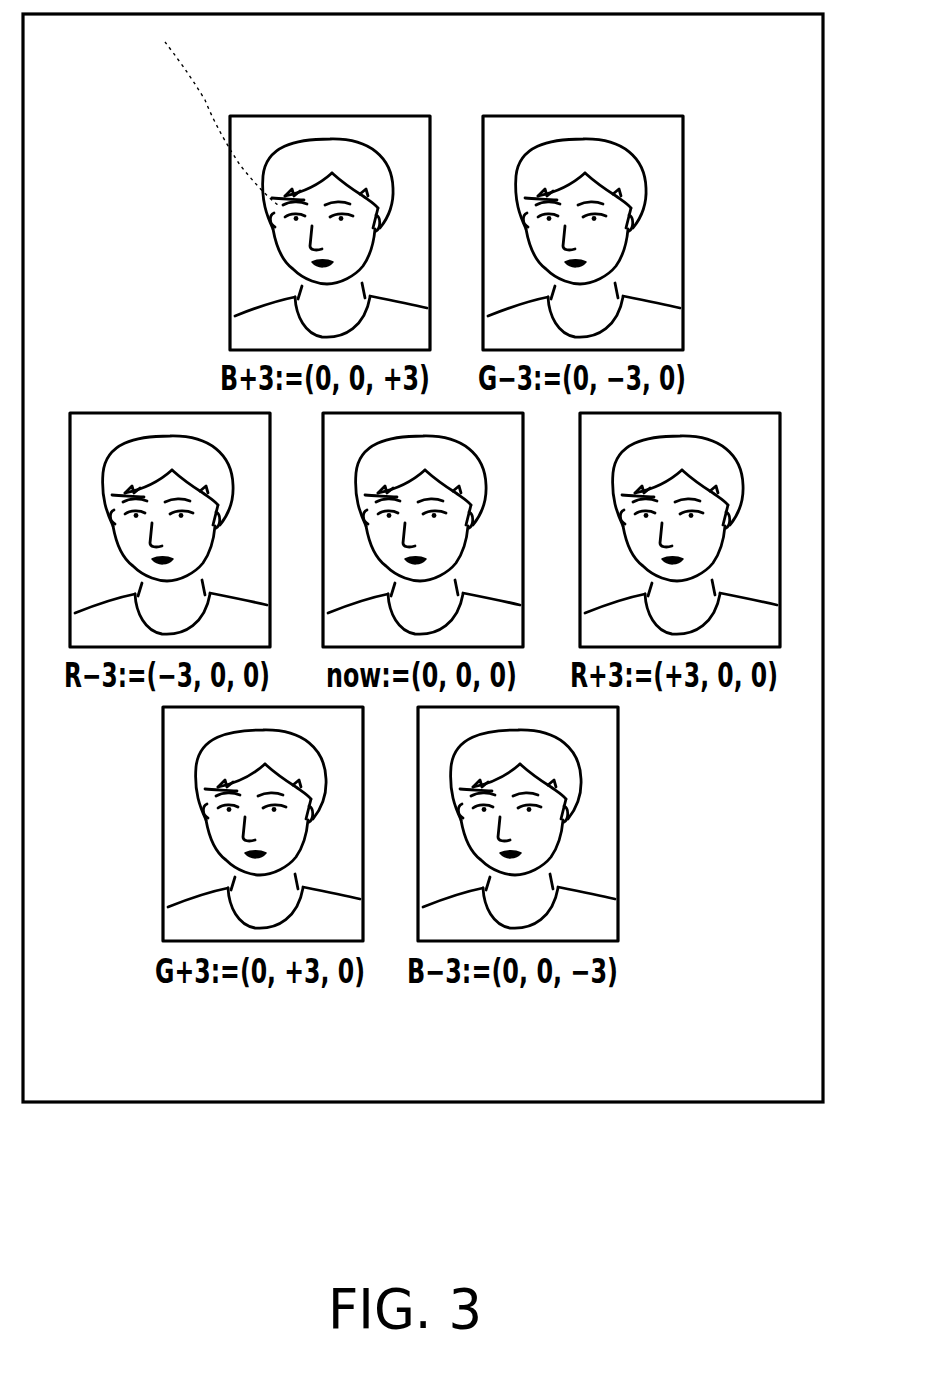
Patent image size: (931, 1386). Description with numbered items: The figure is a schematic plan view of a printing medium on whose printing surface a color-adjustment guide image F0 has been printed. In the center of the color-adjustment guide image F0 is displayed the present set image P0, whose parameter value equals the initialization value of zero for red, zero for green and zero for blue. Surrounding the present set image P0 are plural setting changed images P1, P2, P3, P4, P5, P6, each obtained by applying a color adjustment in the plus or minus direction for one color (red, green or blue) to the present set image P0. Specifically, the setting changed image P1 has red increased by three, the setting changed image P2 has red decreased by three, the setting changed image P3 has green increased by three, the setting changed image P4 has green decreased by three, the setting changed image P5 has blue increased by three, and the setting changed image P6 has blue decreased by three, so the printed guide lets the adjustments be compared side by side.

The color-adjustment guide image F0 is at (825, 172).
The present set image P0 is at (323, 508).
The setting changed image P1 is at (747, 413).
The setting changed image P2 is at (132, 413).
The setting changed image P3 is at (163, 786).
The setting changed image P4 is at (683, 190).
The setting changed image P5 is at (230, 190).
The setting changed image P6 is at (618, 785).